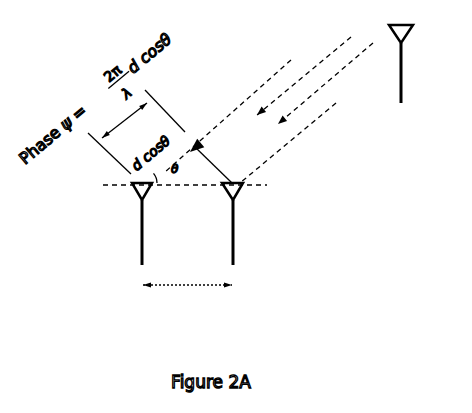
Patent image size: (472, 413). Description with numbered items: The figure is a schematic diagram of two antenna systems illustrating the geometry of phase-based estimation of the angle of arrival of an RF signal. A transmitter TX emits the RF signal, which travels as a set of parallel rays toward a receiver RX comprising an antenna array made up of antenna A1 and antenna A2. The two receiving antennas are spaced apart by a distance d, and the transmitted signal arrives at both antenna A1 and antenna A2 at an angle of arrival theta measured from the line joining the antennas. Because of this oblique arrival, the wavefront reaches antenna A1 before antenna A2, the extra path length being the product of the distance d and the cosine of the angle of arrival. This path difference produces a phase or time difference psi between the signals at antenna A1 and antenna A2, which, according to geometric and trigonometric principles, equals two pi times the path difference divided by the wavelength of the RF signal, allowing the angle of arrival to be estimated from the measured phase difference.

The transmitter TX is at (401, 81).
The receiver RX is at (105, 277).
The antenna A1 is at (234, 234).
The antenna A2 is at (143, 234).
The distance between antennas d is at (187, 299).